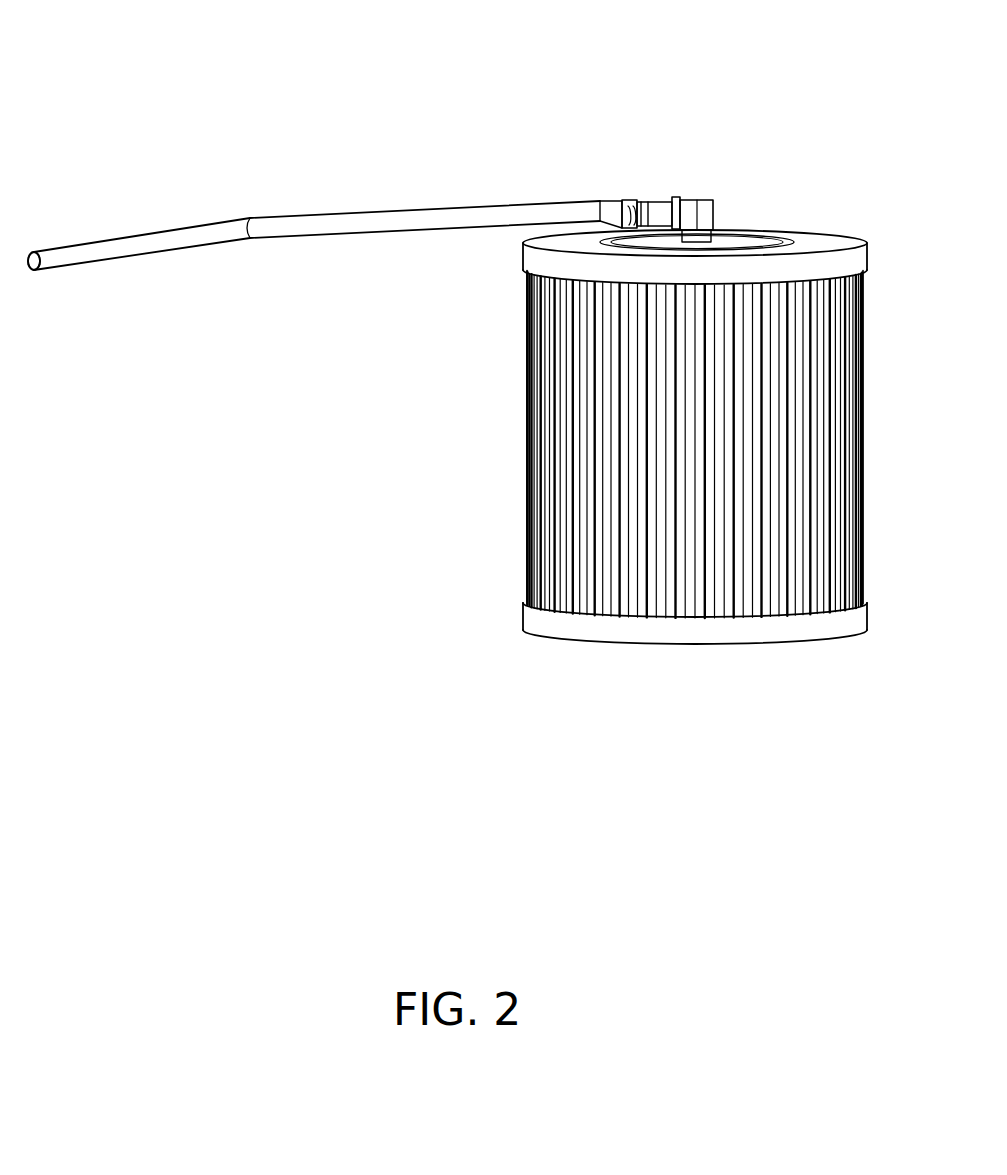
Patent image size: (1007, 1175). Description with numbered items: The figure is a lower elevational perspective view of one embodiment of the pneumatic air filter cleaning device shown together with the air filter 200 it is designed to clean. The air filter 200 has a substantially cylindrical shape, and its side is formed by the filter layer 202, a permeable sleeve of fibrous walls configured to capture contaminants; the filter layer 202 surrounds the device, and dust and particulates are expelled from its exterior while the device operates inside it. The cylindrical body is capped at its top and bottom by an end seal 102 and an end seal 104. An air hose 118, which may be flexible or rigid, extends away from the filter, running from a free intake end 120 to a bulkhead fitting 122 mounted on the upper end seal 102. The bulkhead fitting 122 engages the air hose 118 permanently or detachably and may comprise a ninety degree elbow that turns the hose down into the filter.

The air filter 200 is at (208, 78).
The air hose 118 is at (148, 246).
The intake end 120 is at (35, 272).
The bulkhead fitting 122 is at (689, 218).
The end seal 102 is at (845, 243).
The filter layer 202 is at (530, 528).
The end seal 104 is at (598, 625).